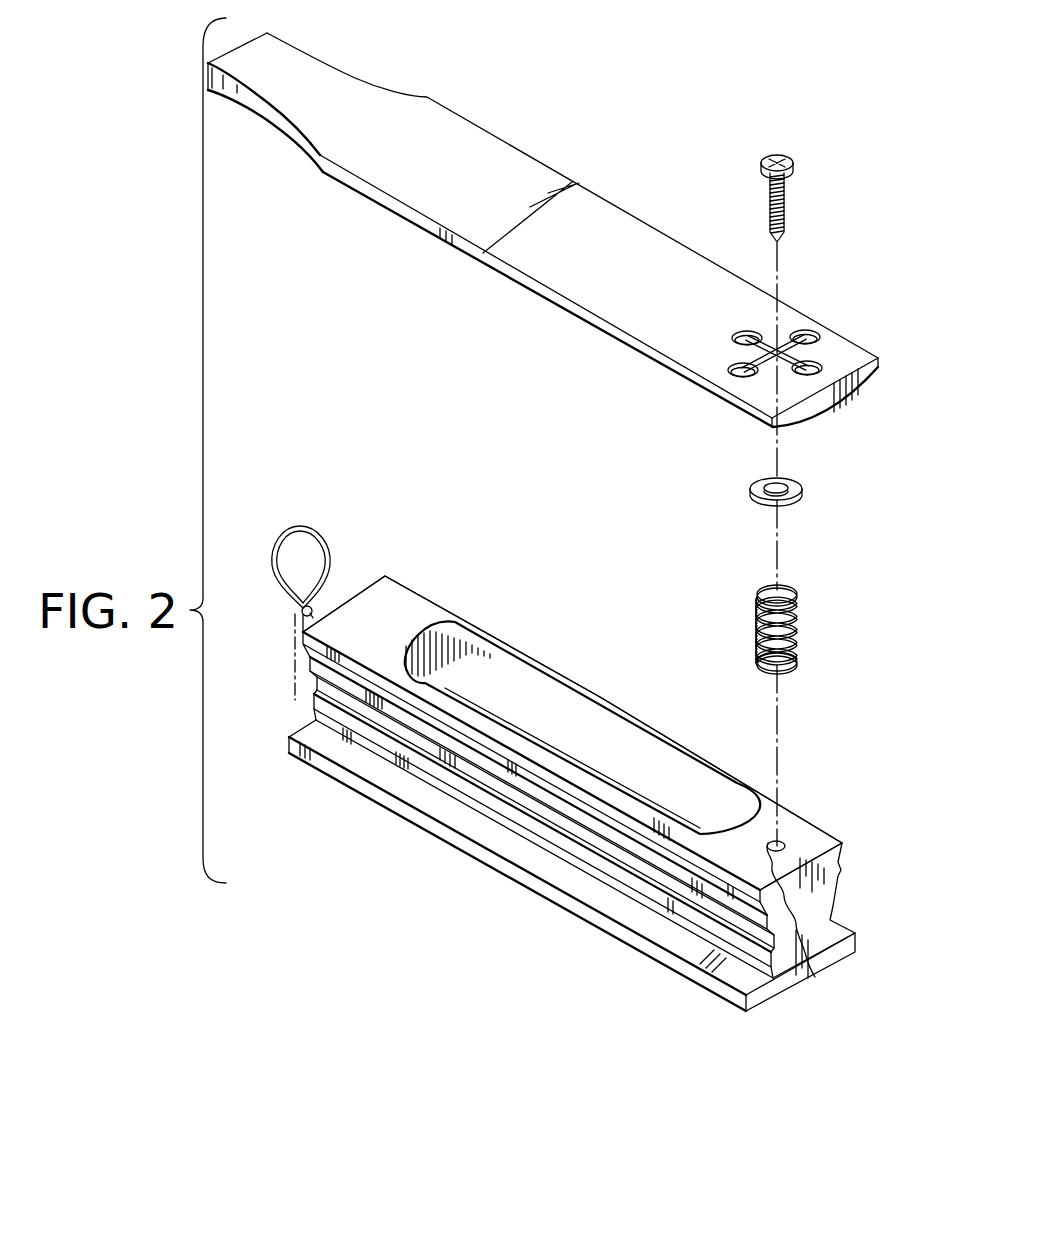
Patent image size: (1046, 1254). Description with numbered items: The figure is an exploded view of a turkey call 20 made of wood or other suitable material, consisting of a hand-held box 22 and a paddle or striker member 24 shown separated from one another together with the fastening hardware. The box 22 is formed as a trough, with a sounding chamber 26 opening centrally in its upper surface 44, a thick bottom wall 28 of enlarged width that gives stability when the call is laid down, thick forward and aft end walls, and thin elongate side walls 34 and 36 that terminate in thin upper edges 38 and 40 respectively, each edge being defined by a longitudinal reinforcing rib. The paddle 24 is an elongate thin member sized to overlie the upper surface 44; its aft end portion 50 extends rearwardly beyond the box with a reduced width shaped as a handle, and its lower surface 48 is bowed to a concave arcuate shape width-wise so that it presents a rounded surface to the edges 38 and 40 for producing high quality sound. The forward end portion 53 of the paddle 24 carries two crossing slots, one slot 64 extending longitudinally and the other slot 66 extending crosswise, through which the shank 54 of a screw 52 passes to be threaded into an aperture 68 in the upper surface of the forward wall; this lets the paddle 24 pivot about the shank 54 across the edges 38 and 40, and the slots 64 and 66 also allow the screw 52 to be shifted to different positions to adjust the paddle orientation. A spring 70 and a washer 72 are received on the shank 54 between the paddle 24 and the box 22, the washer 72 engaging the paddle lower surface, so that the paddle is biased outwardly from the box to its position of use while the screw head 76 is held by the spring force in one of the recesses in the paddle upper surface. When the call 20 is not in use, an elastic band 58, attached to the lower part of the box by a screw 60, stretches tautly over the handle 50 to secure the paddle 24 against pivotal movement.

The turkey call 20 is at (557, 116).
The box 22 is at (822, 842).
The paddle 24 is at (380, 153).
The sounding chamber 26 is at (568, 706).
The bottom wall 28 is at (768, 1012).
The side wall 34 is at (488, 783).
The side wall 36 is at (600, 862).
The upper edge 38 is at (403, 772).
The upper edge 40 is at (513, 638).
The upper surface 44 is at (420, 617).
The lower surface 48 is at (830, 412).
The aft end portion 50 is at (300, 75).
The screw 52 is at (800, 168).
The forward end portion 53 is at (812, 320).
The screw shank 54 is at (795, 215).
The elastic band 58 is at (301, 535).
The screw 60 is at (318, 592).
The slot 64 is at (750, 397).
The slot 66 is at (827, 340).
The aperture 68 is at (810, 968).
The spring 70 is at (798, 612).
The washer 72 is at (806, 491).
The screw head 76 is at (786, 158).